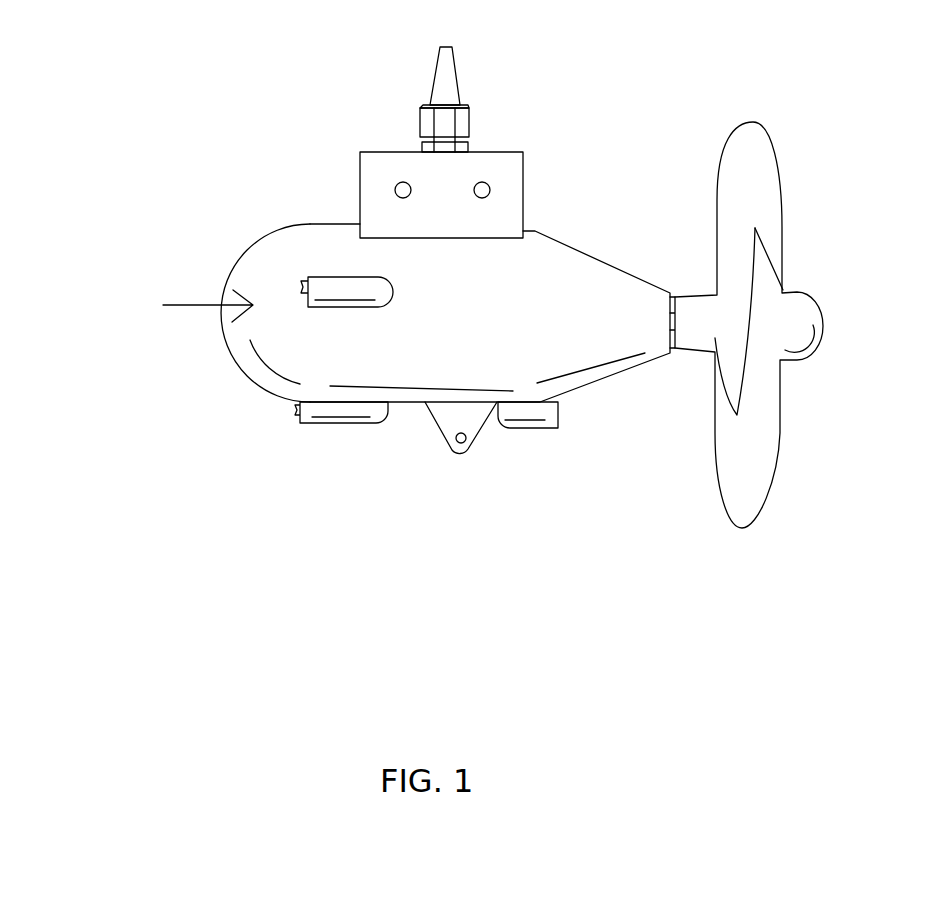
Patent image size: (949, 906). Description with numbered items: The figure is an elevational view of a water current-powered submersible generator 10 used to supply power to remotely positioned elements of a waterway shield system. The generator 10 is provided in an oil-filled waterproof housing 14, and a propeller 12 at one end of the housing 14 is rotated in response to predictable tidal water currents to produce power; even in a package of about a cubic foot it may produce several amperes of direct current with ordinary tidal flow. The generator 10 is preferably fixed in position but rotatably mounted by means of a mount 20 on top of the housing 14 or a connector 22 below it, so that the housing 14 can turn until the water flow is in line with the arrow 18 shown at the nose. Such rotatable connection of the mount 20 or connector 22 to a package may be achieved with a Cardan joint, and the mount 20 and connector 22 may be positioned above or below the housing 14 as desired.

The submersible generator 10 is at (827, 113).
The propeller 12 is at (755, 228).
The housing 14 is at (558, 302).
The arrow 18 is at (202, 305).
The mount 20 is at (453, 103).
The connector 22 is at (447, 443).